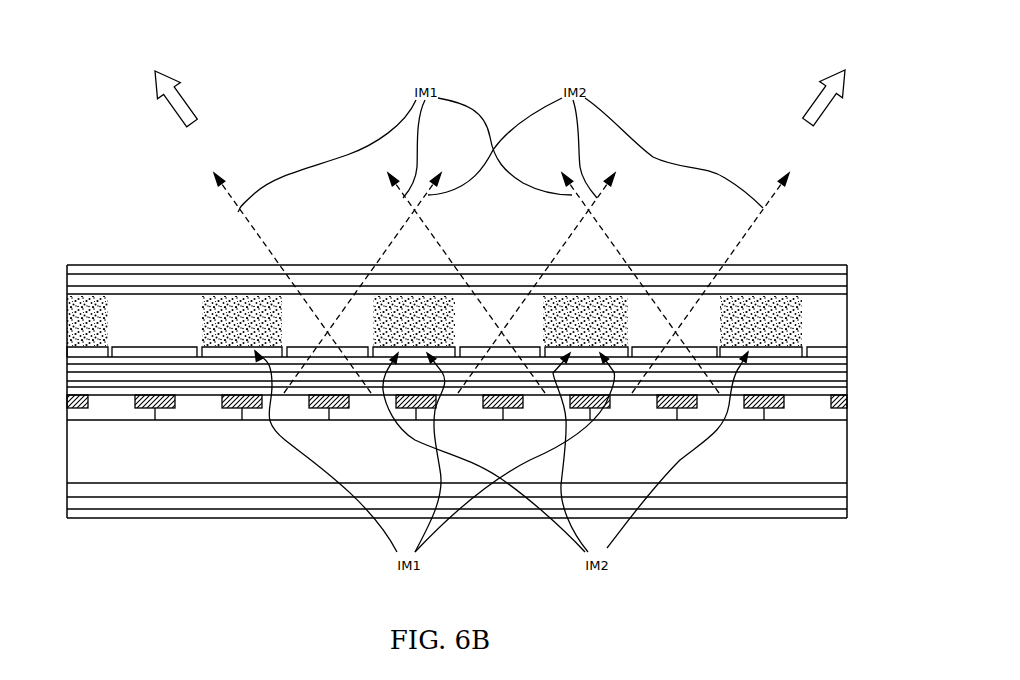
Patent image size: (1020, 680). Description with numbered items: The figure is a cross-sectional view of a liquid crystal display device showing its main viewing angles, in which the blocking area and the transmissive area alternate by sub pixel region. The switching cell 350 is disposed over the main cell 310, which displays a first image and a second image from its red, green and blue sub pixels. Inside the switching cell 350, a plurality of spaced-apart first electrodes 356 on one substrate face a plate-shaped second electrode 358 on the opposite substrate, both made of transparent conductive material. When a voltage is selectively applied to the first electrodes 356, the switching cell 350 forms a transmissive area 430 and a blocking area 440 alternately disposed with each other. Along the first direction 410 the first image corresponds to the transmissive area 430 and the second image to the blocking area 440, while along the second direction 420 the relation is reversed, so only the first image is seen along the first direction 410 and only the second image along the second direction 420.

The main cell 310 is at (60, 383).
The switching cell 350 is at (60, 277).
The first electrodes 356 is at (845, 350).
The second electrode 358 is at (845, 290).
The first direction 410 is at (168, 72).
The second direction 420 is at (833, 72).
The transmissive area 430 is at (675, 310).
The blocking area 440 is at (780, 314).